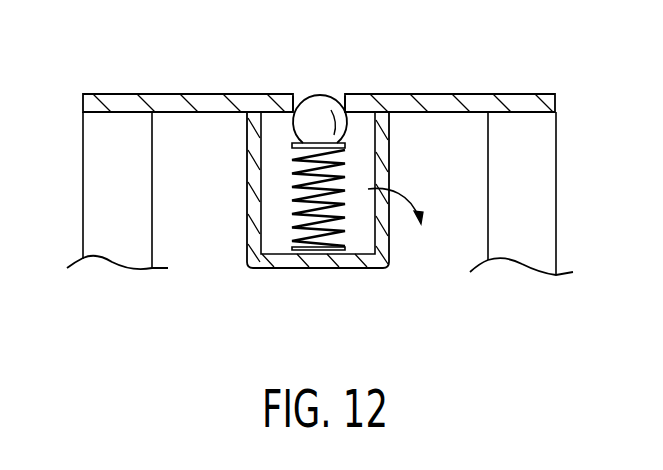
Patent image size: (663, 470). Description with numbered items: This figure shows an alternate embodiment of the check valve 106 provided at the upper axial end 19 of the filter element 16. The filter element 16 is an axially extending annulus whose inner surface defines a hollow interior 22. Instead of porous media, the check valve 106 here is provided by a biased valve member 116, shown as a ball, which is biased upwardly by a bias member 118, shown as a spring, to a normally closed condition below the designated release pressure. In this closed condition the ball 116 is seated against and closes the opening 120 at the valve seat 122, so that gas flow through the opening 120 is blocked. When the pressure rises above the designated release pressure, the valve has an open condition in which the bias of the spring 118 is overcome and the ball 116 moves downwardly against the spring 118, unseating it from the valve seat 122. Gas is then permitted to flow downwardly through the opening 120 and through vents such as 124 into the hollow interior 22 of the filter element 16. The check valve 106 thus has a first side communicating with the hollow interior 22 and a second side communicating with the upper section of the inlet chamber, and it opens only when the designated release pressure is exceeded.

The filter element 16 is at (103, 228).
The upper axial end 19 is at (542, 94).
The hollow interior 22 is at (200, 228).
The check valve 106 is at (357, 132).
The biased valve member 116 is at (319, 120).
The bias member 118 is at (300, 234).
The opening 120 is at (302, 92).
The valve seat 122 is at (338, 93).
The vent 124 is at (248, 188).